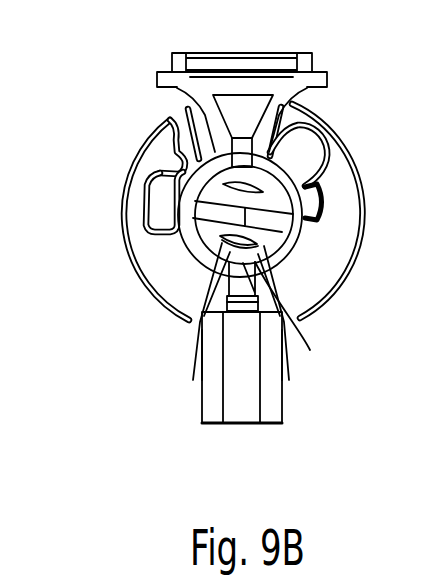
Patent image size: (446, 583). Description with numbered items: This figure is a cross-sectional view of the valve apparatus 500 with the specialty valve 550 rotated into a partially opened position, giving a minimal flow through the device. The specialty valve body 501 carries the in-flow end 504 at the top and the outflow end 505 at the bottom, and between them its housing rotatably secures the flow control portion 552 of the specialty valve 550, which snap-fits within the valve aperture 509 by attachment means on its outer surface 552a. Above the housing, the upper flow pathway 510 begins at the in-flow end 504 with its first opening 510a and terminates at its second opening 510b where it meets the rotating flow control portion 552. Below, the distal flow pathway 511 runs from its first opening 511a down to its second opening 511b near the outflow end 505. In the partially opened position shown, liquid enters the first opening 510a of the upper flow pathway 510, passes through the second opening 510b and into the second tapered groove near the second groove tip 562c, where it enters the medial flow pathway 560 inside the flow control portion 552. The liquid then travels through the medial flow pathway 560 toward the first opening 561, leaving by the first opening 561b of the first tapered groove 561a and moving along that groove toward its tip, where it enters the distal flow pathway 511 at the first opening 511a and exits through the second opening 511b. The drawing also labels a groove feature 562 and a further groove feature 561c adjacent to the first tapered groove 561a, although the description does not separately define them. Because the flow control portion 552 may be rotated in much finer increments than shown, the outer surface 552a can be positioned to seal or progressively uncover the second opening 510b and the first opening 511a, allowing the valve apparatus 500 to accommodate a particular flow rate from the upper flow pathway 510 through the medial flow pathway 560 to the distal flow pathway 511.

The valve apparatus 500 is at (254, 410).
The specialty valve body 501 is at (283, 386).
The in-flow end 504 is at (261, 41).
The outflow end 505 is at (224, 459).
The valve aperture 509 is at (200, 290).
The upper flow pathway 510 is at (222, 116).
The first opening of upper flow pathway 510a is at (213, 76).
The second opening of upper flow pathway 510b is at (226, 157).
The distal flow pathway 511 is at (256, 392).
The first opening of distal flow pathway 511a is at (199, 370).
The second opening of distal flow pathway 511b is at (243, 424).
The specialty valve 550 is at (341, 308).
The flow control portion 552 is at (288, 192).
The outer surface of flow control portion 552a is at (238, 280).
The medial flow pathway 560 is at (205, 262).
The first opening 561 is at (301, 211).
The first tapered groove 561a is at (188, 188).
The first opening of first tapered groove 561b is at (188, 216).
The ring spoke 561c is at (352, 248).
The ball slot 562 is at (216, 228).
The second groove tip 562c is at (260, 148).